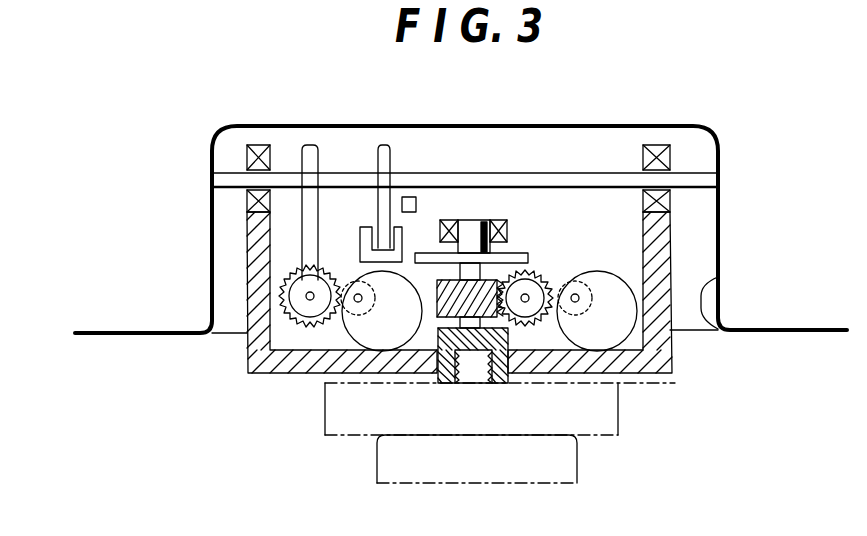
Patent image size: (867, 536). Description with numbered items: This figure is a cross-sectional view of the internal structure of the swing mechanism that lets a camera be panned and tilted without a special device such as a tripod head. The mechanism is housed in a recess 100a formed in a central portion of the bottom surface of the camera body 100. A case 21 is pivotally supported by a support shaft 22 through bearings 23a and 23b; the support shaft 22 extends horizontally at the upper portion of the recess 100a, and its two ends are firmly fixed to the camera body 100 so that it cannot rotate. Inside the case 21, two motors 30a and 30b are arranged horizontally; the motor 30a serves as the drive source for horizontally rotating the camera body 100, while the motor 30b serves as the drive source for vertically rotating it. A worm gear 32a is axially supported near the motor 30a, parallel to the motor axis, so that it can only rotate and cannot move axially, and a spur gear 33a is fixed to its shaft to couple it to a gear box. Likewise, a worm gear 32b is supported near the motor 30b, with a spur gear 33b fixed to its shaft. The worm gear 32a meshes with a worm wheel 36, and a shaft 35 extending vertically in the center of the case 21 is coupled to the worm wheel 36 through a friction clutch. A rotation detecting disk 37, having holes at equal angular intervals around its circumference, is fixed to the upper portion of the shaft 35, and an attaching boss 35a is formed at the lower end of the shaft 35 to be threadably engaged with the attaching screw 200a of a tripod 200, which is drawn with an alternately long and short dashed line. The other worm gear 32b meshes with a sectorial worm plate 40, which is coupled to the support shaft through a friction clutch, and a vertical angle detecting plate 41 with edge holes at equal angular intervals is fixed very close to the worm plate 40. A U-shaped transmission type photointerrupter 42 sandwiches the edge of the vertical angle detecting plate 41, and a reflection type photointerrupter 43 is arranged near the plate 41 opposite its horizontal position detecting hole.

The camera body 100 is at (150, 203).
The recess 100a is at (706, 306).
The case 21 is at (660, 240).
The support shaft 22 is at (508, 177).
The bearing 23a is at (657, 150).
The bearing 23b is at (257, 150).
The motor 30a is at (612, 283).
The motor 30b is at (387, 283).
The worm gear 32a is at (527, 300).
The worm gear 32b is at (310, 298).
The spur gear 33a is at (523, 268).
The spur gear 33b is at (292, 322).
The shaft 35 is at (475, 221).
The attaching boss 35a is at (450, 377).
The worm wheel 36 is at (437, 330).
The rotation detecting disk 37 is at (512, 254).
The worm plate 40 is at (303, 147).
The vertical angle detecting plate 41 is at (377, 147).
The transmission type photointerrupter 42 is at (409, 197).
The reflection type photointerrupter 43 is at (431, 223).
The tripod 200 is at (603, 418).
The attaching screw 200a is at (548, 472).